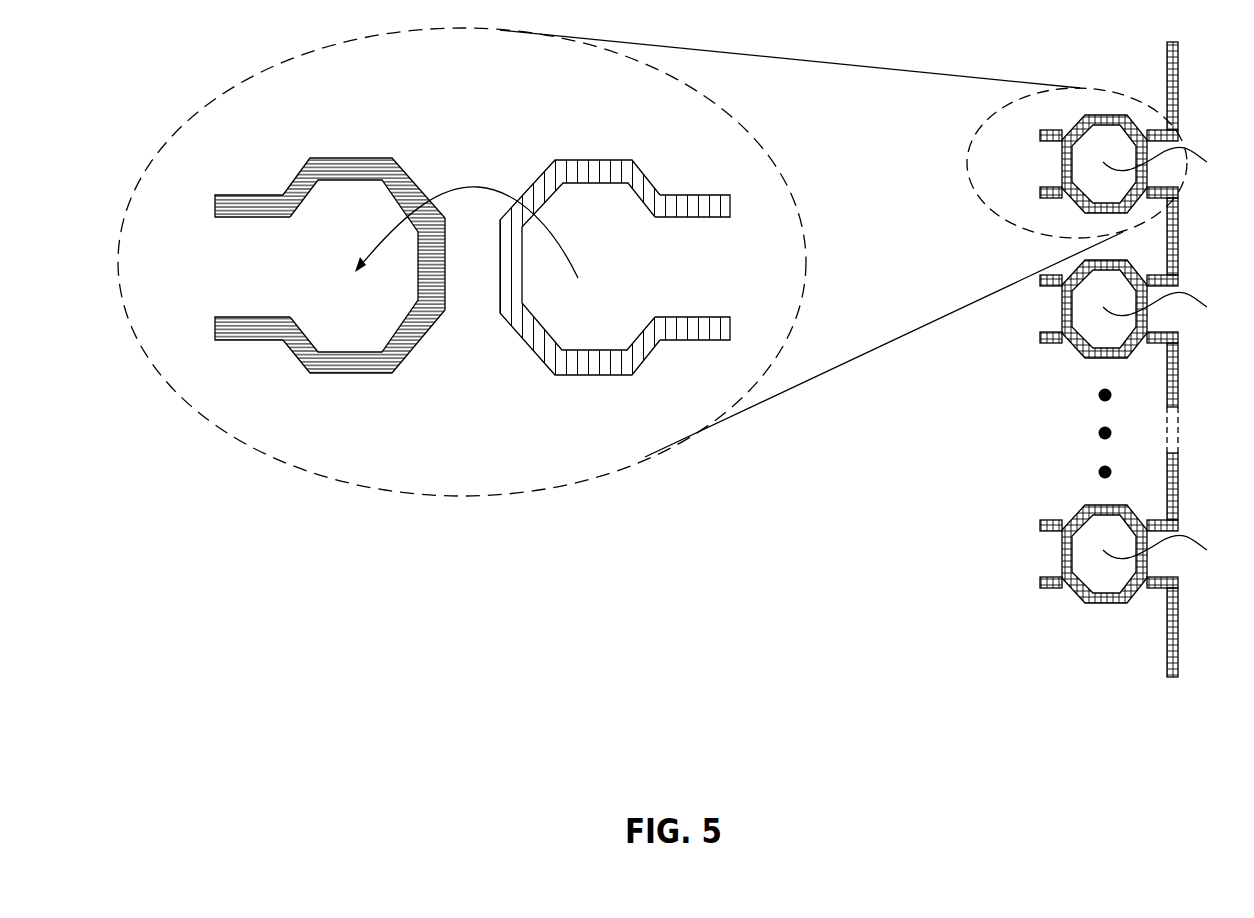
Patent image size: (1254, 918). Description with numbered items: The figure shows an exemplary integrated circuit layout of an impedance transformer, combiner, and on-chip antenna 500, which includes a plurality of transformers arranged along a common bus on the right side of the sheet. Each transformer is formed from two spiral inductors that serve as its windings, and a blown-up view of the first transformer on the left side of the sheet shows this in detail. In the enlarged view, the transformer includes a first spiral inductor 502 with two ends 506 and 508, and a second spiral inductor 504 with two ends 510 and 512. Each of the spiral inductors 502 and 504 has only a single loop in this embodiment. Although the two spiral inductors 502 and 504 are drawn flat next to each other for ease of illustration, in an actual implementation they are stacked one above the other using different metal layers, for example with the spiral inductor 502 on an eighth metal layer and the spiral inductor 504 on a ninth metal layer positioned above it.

The impedance transformer, combiner, and on-chip antenna 500 is at (937, 628).
The first spiral inductor 502 is at (347, 172).
The second spiral inductor 504 is at (583, 368).
The end of first spiral inductor 506 is at (231, 205).
The end of first spiral inductor 508 is at (231, 328).
The end of second spiral inductor 510 is at (715, 207).
The end of second spiral inductor 512 is at (715, 330).